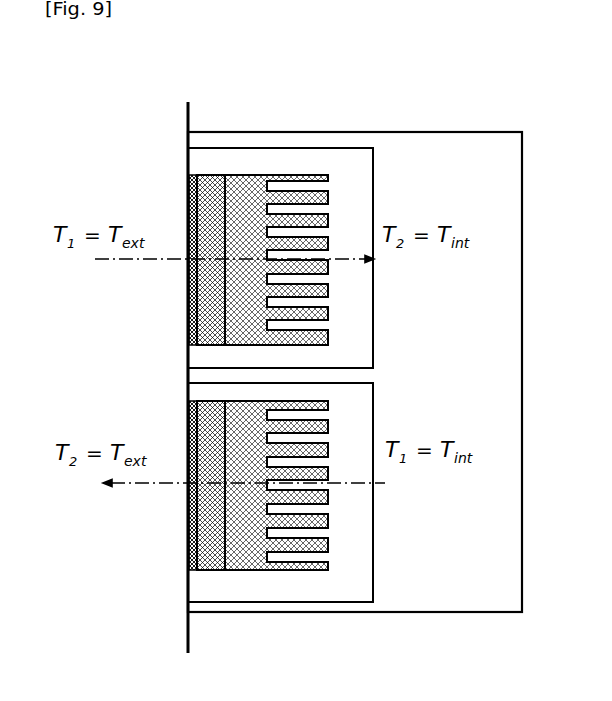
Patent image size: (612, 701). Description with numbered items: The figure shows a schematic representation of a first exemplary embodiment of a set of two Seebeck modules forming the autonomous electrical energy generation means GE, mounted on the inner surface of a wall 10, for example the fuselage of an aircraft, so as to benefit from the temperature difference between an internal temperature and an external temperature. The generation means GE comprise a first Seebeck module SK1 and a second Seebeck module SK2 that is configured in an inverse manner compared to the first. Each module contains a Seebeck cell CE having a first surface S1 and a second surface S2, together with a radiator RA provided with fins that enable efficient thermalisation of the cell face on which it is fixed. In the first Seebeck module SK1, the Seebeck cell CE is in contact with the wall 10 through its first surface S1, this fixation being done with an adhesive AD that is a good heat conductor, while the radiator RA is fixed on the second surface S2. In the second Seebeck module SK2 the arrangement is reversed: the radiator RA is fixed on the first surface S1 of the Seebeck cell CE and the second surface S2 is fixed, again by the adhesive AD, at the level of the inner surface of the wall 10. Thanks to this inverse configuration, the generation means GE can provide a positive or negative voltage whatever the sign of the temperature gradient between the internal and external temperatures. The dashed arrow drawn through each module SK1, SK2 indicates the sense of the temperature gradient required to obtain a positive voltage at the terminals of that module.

The wall 10 is at (187, 160).
The autonomous electrical energy generation means GE is at (355, 372).
The first Seebeck module SK1 is at (280, 259).
The second Seebeck module SK2 is at (280, 494).
The radiator RA is at (276, 372).
The Seebeck cell CE is at (212, 222).
The adhesive AD is at (190, 326).
The first surface S1 is at (196, 175).
The second surface S2 is at (227, 175).